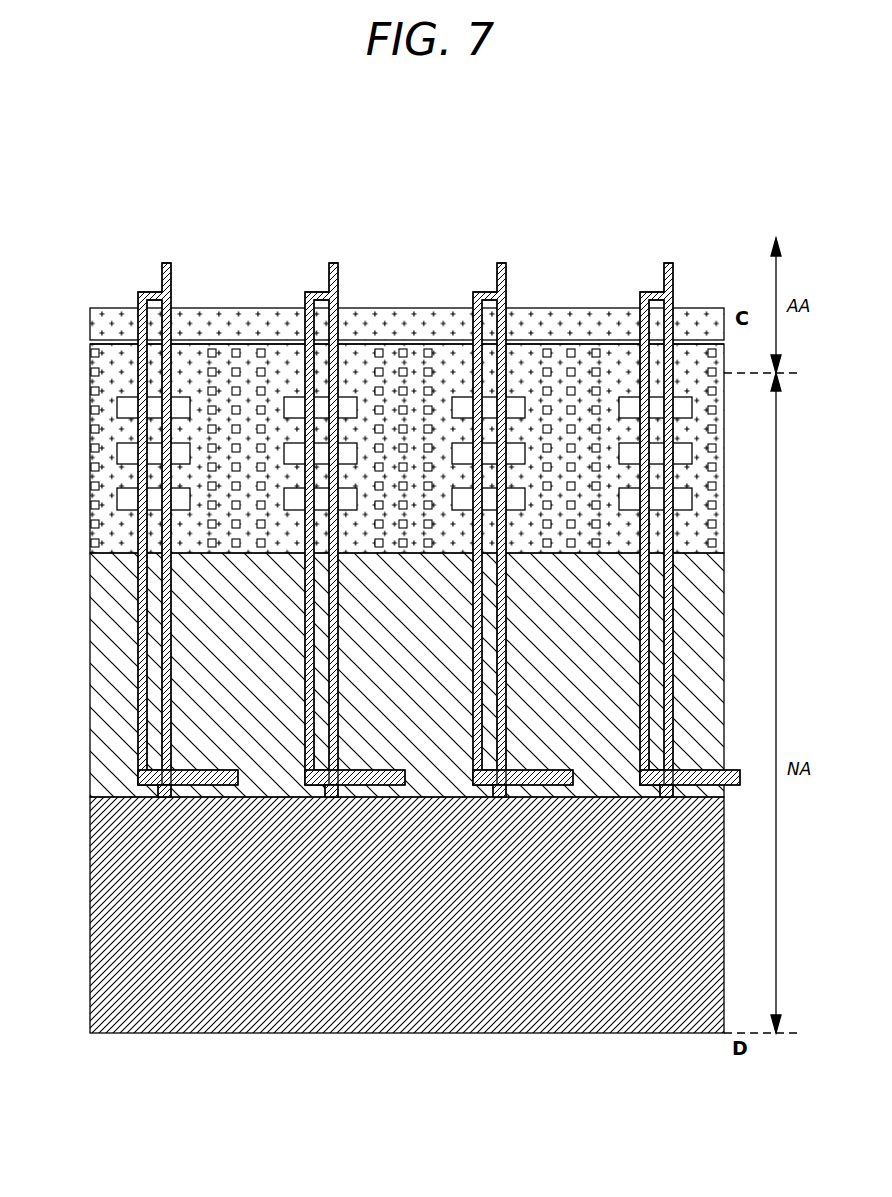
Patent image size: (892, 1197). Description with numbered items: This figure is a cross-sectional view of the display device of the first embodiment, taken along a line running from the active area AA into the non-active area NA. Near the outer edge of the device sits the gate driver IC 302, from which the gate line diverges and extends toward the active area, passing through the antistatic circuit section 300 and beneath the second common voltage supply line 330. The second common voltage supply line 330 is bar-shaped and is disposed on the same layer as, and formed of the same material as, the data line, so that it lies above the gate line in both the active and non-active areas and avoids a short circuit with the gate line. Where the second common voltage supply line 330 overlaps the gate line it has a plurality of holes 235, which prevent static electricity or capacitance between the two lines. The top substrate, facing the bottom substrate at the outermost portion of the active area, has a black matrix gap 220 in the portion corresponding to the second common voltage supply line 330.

The black matrix gap 220 is at (93, 340).
The holes 235 is at (128, 407).
The antistatic circuit section 300 is at (100, 722).
The gate driver IC 302 is at (102, 986).
The second common voltage supply line 330 is at (113, 318).